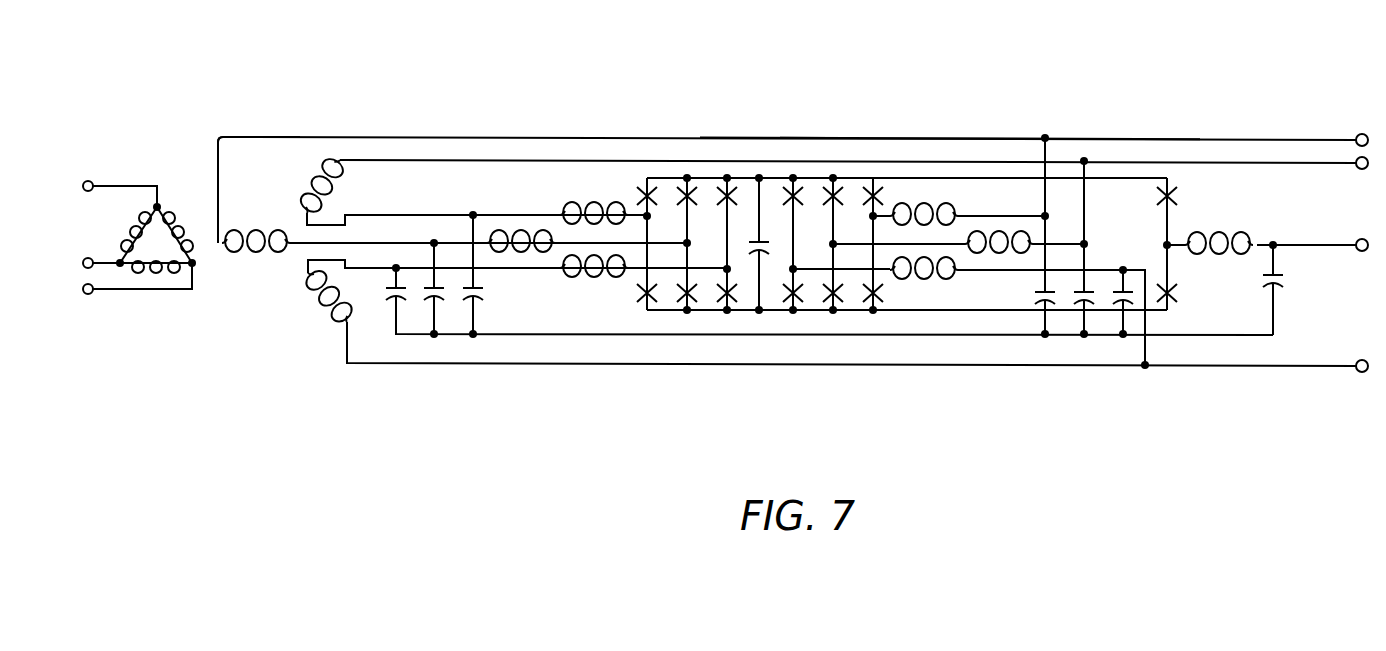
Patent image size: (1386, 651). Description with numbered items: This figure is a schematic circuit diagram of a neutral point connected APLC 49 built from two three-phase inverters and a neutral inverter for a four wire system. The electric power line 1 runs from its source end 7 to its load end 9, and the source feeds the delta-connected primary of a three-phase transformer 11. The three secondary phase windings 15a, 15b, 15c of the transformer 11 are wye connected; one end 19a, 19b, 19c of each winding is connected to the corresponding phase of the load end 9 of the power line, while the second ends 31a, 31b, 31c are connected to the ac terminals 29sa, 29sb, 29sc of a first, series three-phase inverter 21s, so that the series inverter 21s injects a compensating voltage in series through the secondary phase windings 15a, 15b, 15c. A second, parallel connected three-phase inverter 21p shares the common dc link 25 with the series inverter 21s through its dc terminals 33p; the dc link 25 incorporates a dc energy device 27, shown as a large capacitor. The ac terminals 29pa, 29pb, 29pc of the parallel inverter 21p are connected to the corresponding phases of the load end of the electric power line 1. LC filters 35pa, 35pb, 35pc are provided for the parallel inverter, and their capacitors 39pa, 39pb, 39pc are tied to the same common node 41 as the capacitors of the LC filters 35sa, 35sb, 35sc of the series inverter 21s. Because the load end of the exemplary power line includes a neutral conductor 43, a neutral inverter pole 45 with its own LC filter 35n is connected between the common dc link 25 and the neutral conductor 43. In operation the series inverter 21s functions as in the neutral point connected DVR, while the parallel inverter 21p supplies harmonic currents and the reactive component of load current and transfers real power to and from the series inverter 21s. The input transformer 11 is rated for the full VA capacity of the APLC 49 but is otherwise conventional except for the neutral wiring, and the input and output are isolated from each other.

The electric power line 1 is at (267, 111).
The source end 7 is at (122, 168).
The load end 9 is at (1360, 132).
The three-phase transformer 11 is at (181, 176).
The secondary phase winding 15a is at (258, 253).
The secondary phase winding 15b is at (318, 178).
The secondary phase winding 15c is at (322, 298).
The first end of secondary phase winding 19a is at (220, 240).
The first end of secondary phase winding 19b is at (341, 160).
The first end of secondary phase winding 19c is at (345, 332).
The parallel connected three-phase inverter 21p is at (880, 112).
The series three-phase inverter 21s is at (740, 128).
The common dc link 25 is at (768, 143).
The dc energy device 27 is at (754, 256).
The ac terminal of series inverter 29sa is at (645, 216).
The ac terminal of series inverter 29sb is at (688, 243).
The ac terminal of series inverter 29sc is at (727, 269).
The ac terminal of parallel inverter 29pa is at (875, 216).
The ac terminal of parallel inverter 29pb is at (835, 246).
The ac terminal of parallel inverter 29pc is at (793, 269).
The second end of secondary phase winding 31a is at (296, 248).
The second end of secondary phase winding 31b is at (307, 222).
The second end of secondary phase winding 31c is at (307, 268).
The dc terminals of parallel inverter 33p is at (795, 176).
The LC filter for series inverter 35sa is at (590, 181).
The LC filter for series inverter 35sb is at (515, 196).
The LC filter for series inverter 35sc is at (558, 305).
The LC filter for parallel inverter 35pa is at (969, 199).
The LC filter for parallel inverter 35pb is at (1048, 217).
The LC filter for parallel inverter 35pc is at (960, 296).
The neutral LC filter 35n is at (1238, 281).
The filter capacitor of parallel inverter filter 39pa is at (1037, 302).
The filter capacitor of parallel inverter filter 39pb is at (1086, 302).
The filter capacitor of parallel inverter filter 39pc is at (1132, 303).
The common node 41 is at (640, 335).
The neutral conductor 43 is at (1290, 248).
The neutral inverter pole 45 is at (1183, 219).
The neutral point connected APLC 49 is at (805, 120).